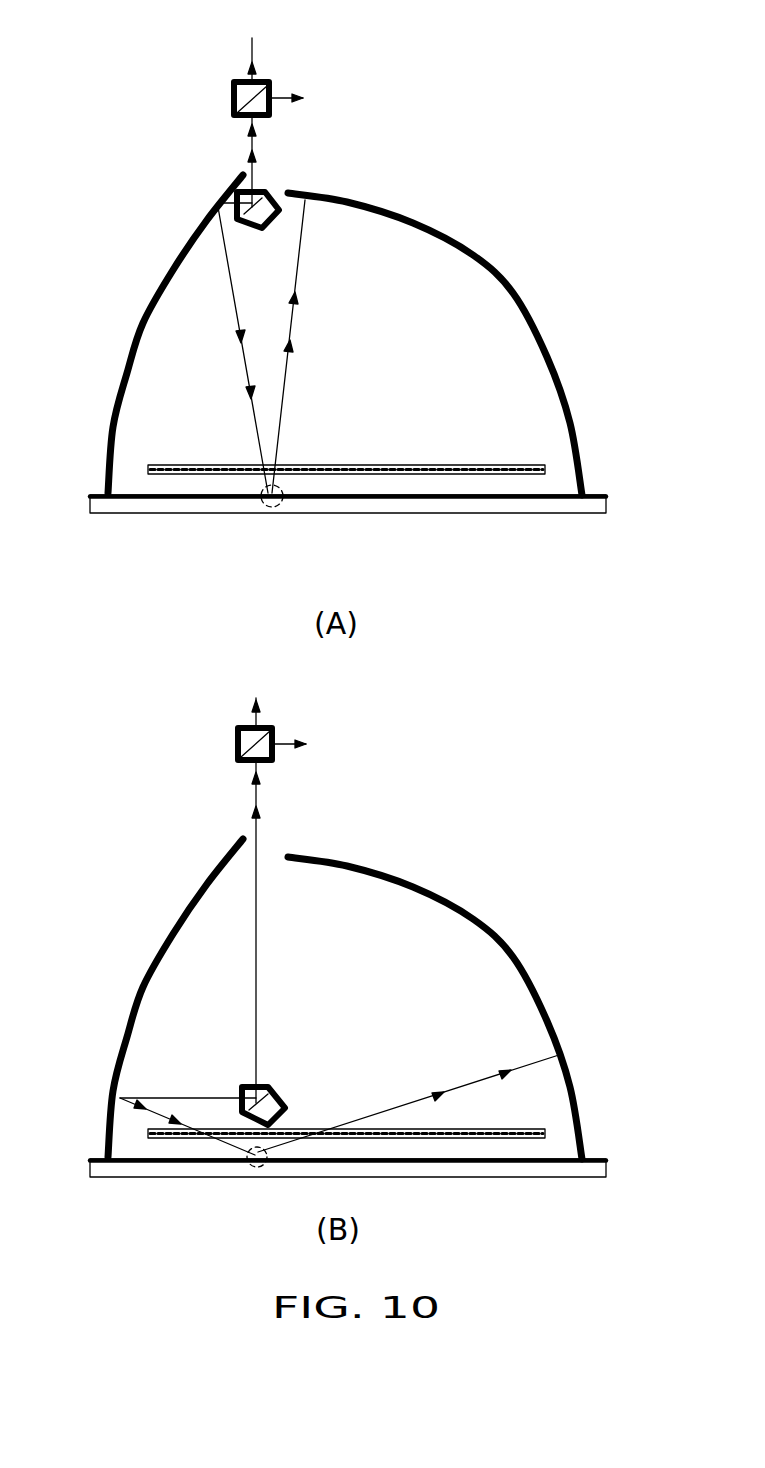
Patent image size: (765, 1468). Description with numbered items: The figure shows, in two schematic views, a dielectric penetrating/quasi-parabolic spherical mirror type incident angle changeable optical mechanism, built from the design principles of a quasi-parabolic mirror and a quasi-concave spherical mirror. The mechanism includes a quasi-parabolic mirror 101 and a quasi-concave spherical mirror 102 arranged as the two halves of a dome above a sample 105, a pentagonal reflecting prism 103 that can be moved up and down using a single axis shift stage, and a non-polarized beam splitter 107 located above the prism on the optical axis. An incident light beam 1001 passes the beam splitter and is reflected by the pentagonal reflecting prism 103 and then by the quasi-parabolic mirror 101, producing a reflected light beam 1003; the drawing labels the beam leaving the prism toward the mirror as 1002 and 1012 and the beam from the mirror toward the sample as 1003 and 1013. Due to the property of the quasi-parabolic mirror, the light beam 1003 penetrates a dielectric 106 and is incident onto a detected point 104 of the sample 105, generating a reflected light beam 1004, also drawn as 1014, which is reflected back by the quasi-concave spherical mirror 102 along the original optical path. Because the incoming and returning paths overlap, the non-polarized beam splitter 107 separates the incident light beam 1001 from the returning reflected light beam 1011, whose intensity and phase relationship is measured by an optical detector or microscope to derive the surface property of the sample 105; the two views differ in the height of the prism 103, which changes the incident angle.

The quasi-parabolic mirror 101 is at (143, 323).
The quasi-concave spherical mirror 102 is at (473, 256).
The pentagonal reflecting prism 103 is at (262, 229).
The detected point 104 is at (280, 512).
The sample 105 is at (412, 503).
The dielectric 106 is at (526, 466).
The non-polarized beam splitter 107 is at (232, 98).
The incident light beam 1001 is at (273, 554).
The reflected light beam 1011 is at (310, 439).
The light beam reflected by mirror 1002 is at (188, 621).
The return light beam 1012 is at (230, 203).
The reflected light beam 1003 is at (90, 1105).
The light beam returning from sample 1013 is at (207, 754).
The reflected light beam 1004 is at (410, 676).
The light beam toward dome 1014 is at (407, 682).